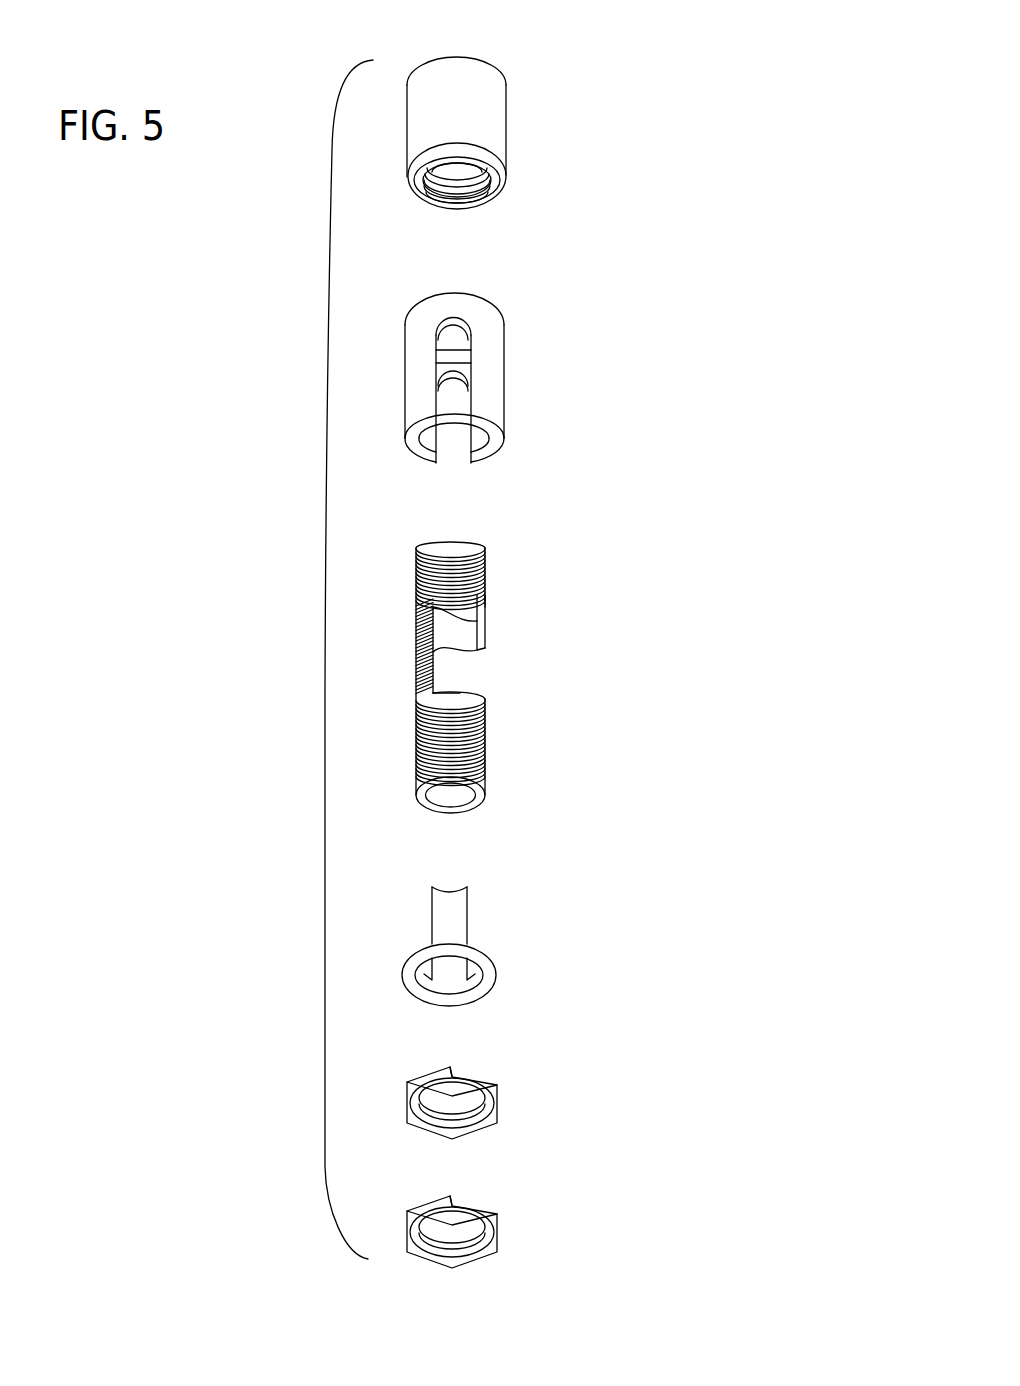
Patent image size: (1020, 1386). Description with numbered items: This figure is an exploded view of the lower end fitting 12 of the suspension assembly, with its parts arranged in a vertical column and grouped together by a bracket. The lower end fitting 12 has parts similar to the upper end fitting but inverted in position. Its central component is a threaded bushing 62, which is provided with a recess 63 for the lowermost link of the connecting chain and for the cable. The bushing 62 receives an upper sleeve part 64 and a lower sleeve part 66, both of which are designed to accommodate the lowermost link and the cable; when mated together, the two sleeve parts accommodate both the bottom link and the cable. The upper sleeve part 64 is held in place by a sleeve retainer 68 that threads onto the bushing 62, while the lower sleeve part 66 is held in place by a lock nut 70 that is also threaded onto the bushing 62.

The lower end fitting 12 is at (325, 686).
The bushing 62 is at (482, 605).
The notch 63 is at (457, 693).
The upper sleeve part 64 is at (505, 358).
The lower sleeve part 66 is at (465, 918).
The sleeve retainer 68 is at (487, 97).
The lock nut 70 is at (490, 1196).